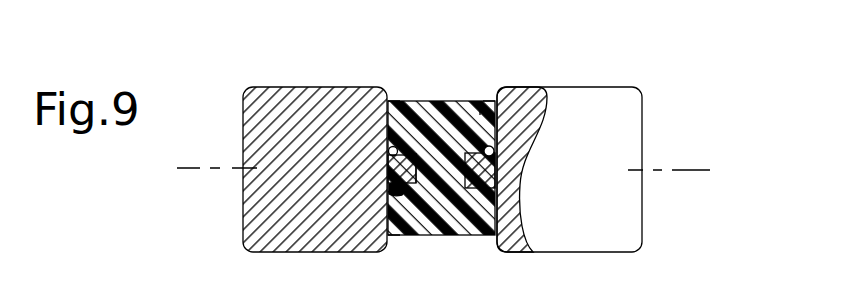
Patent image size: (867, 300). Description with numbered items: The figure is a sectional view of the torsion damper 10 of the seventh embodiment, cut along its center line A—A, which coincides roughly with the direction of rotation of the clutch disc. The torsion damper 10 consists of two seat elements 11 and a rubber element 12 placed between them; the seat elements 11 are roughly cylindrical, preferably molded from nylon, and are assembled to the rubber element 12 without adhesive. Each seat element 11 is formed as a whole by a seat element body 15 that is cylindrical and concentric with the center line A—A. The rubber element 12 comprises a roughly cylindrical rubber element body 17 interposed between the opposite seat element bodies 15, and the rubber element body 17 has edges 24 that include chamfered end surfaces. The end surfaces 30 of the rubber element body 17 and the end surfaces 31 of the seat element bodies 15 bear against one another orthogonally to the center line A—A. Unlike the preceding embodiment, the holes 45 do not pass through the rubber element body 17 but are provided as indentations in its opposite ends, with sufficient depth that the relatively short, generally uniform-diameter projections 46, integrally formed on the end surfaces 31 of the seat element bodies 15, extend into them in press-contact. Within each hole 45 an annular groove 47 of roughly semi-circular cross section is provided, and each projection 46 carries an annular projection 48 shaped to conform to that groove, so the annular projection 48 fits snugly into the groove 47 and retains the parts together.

The torsion damper 10 is at (266, 56).
The seat elements 11 is at (243, 80).
The rubber element 12 is at (455, 92).
The seat element bodies 15 is at (268, 233).
The rubber element body 17 is at (480, 115).
The edges 24 is at (493, 103).
The end surfaces 30 is at (388, 118).
The end surfaces 31 is at (395, 103).
The holes 45 is at (430, 103).
The projections 46 is at (448, 235).
The annular groove 47 is at (478, 150).
The annular projection 48 is at (480, 150).